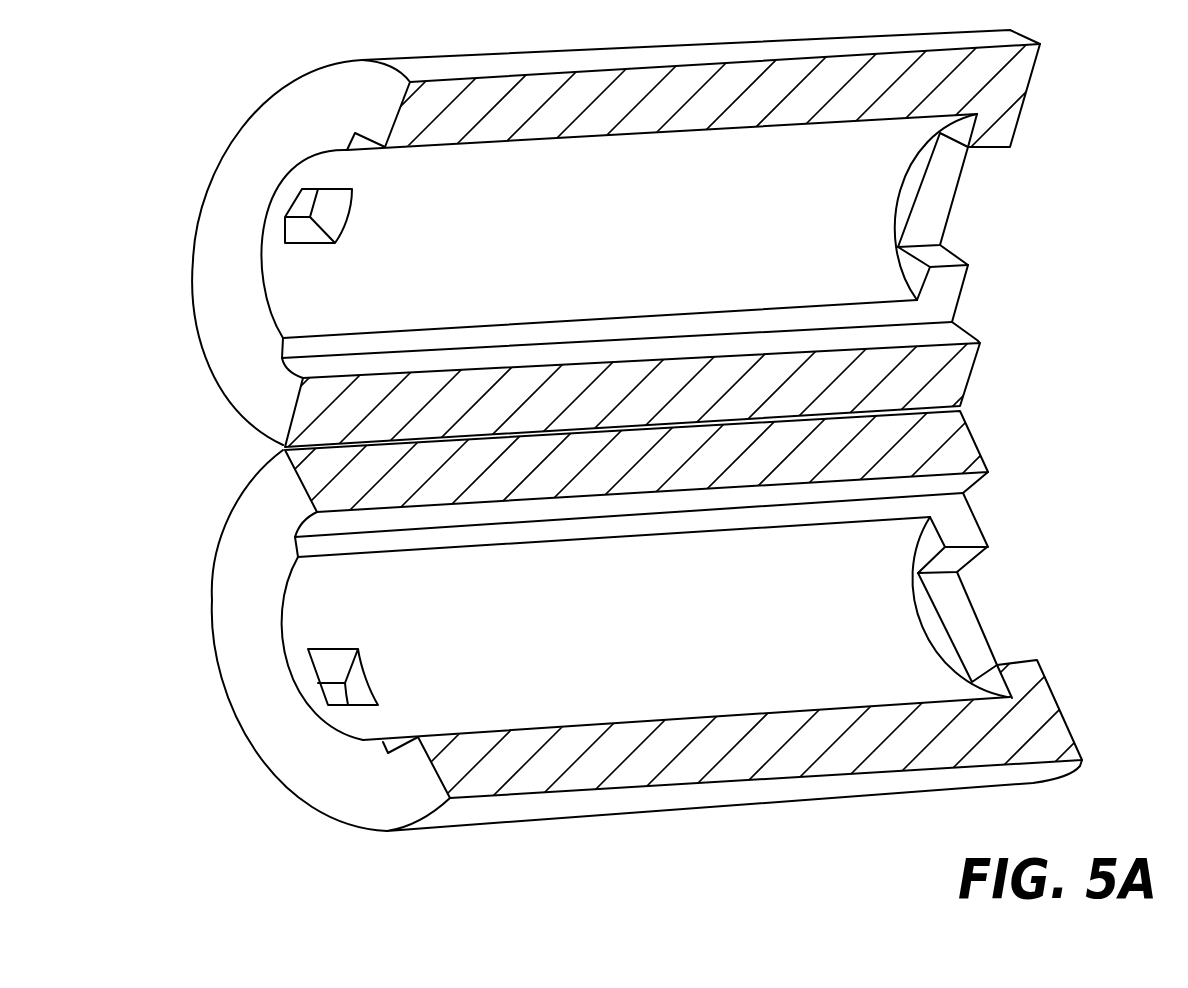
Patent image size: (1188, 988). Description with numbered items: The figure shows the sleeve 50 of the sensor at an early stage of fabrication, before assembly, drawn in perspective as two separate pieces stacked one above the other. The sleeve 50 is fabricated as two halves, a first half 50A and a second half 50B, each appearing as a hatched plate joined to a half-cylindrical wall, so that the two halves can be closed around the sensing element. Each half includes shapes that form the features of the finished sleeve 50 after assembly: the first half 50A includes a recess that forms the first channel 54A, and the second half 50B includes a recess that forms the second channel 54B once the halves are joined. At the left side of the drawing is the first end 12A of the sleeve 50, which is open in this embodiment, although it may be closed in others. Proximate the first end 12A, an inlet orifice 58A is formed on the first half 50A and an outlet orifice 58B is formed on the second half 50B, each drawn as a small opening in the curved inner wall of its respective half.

The first end 12A is at (636, 435).
The sleeve 50 is at (676, 416).
The first half 50A is at (637, 460).
The second half 50B is at (957, 363).
The first channel 54A is at (957, 607).
The second channel 54B is at (943, 190).
The inlet orifice 58A is at (340, 676).
The outlet orifice 58B is at (320, 212).